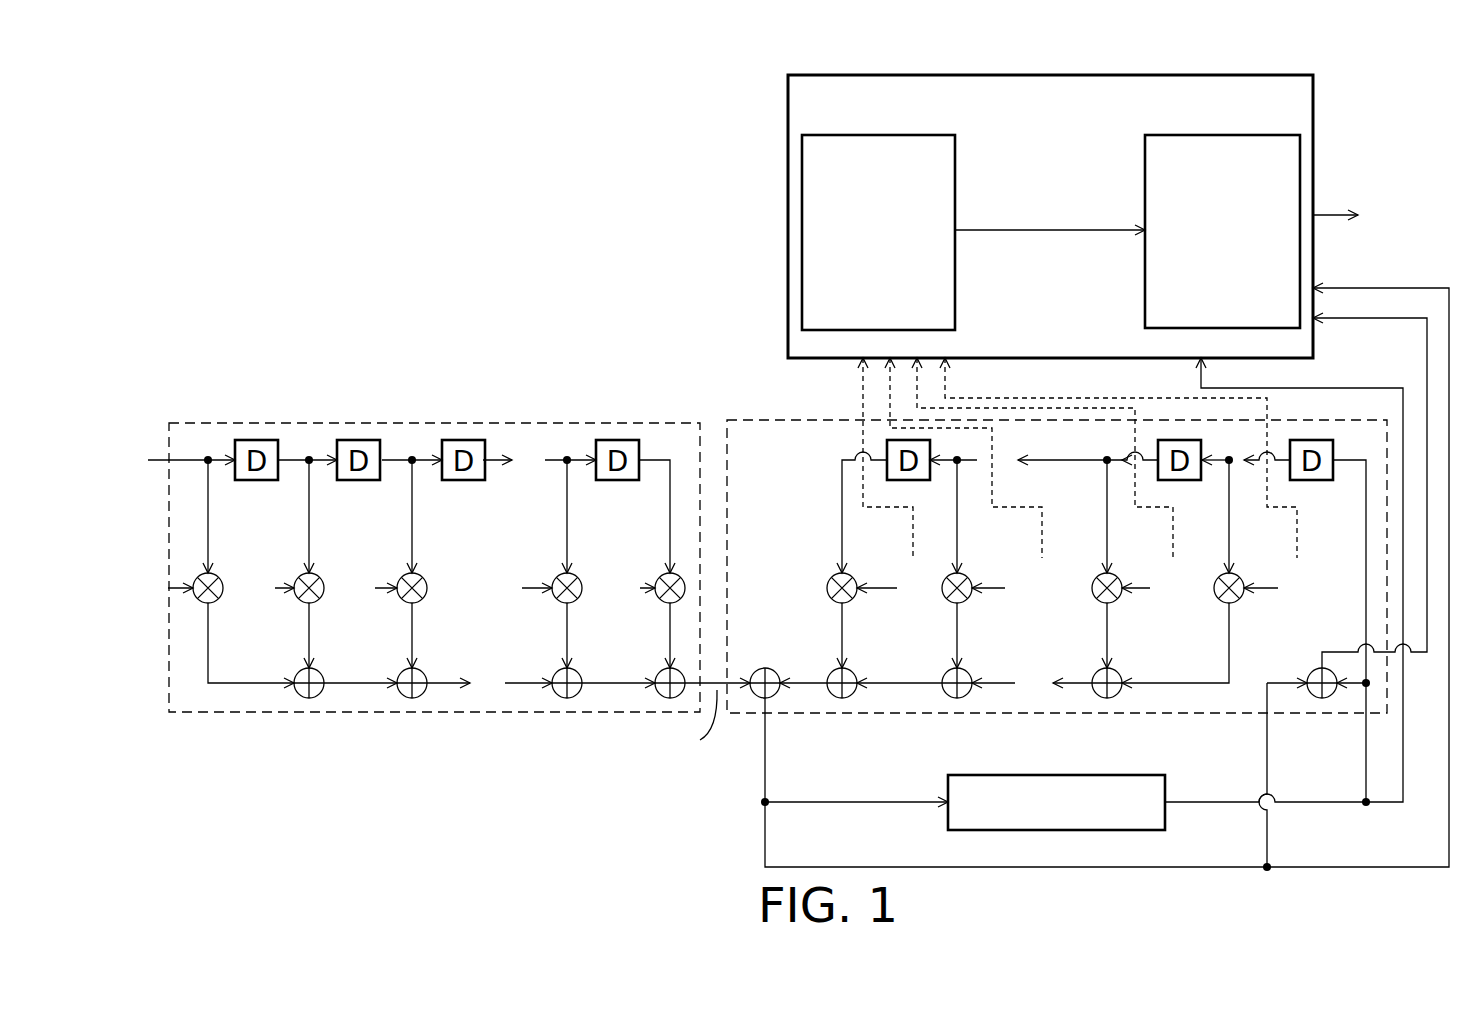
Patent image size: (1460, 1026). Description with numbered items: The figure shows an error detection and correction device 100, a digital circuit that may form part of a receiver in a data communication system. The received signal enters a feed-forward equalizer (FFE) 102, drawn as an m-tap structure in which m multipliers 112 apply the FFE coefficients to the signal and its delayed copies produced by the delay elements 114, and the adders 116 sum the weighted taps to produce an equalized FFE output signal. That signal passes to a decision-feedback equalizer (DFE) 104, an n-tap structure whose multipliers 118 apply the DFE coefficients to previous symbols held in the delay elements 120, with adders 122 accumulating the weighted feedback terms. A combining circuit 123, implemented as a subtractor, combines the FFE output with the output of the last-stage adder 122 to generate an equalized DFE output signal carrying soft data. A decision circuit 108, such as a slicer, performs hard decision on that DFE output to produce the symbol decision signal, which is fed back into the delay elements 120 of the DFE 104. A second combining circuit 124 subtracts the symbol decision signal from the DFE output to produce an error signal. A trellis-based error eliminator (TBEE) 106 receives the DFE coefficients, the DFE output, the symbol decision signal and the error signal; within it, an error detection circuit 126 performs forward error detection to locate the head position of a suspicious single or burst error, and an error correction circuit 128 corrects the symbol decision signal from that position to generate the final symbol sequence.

The error detection and correction device 100 is at (289, 220).
The feed-forward equalizer (FFE) 102 is at (430, 422).
The decision-feedback equalizer (DFE) 104 is at (1180, 716).
The trellis-based error eliminator (TBEE) 106 is at (1078, 73).
The decision circuit 108 is at (962, 775).
The multipliers 112 is at (218, 603).
The delay elements 114 is at (262, 482).
The adders 116 is at (300, 700).
The multipliers 118 is at (1240, 603).
The delay elements 120 is at (1318, 482).
The adders 122 is at (1097, 700).
The combining circuit 123 is at (757, 700).
The combining circuit 124 is at (1318, 700).
The error detection circuit 126 is at (890, 135).
The error correction circuit 128 is at (1200, 135).